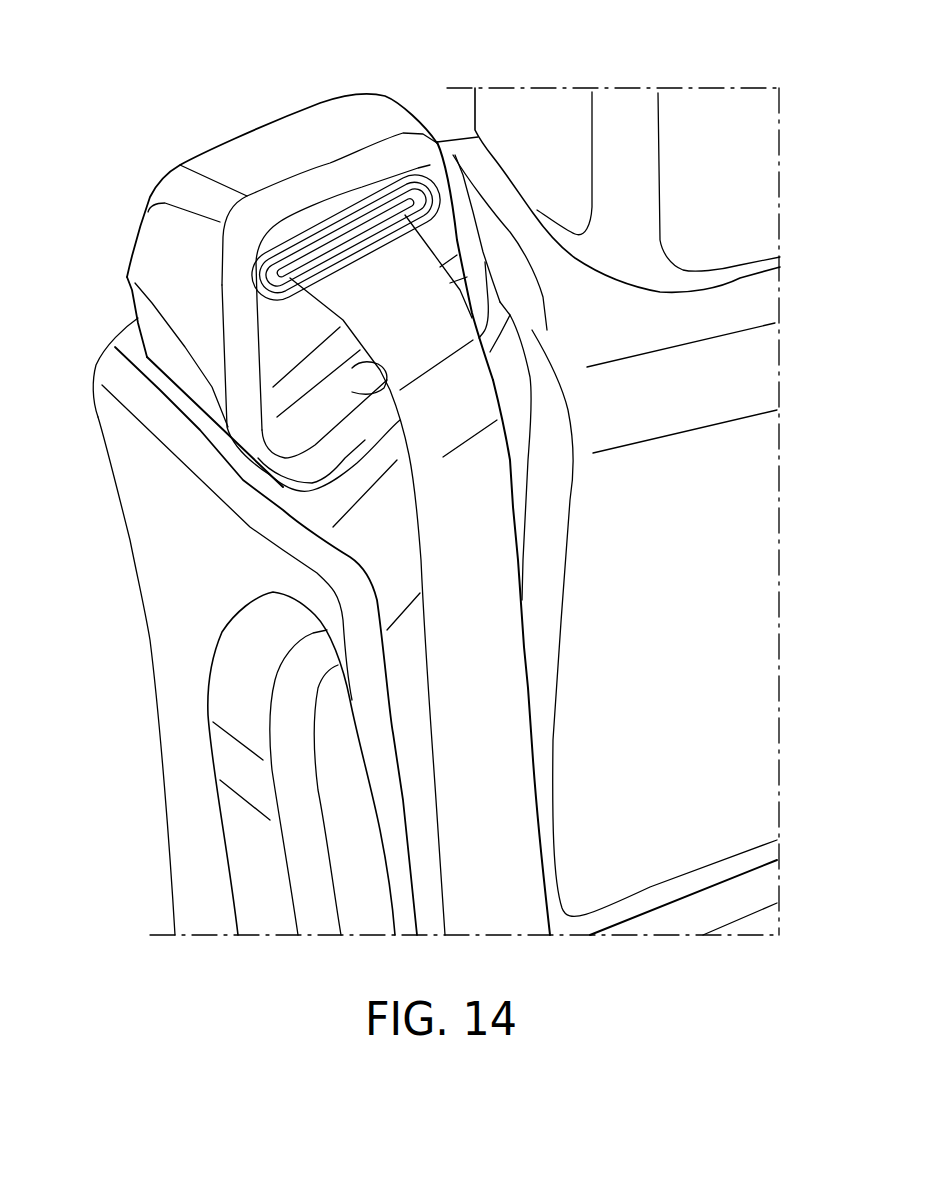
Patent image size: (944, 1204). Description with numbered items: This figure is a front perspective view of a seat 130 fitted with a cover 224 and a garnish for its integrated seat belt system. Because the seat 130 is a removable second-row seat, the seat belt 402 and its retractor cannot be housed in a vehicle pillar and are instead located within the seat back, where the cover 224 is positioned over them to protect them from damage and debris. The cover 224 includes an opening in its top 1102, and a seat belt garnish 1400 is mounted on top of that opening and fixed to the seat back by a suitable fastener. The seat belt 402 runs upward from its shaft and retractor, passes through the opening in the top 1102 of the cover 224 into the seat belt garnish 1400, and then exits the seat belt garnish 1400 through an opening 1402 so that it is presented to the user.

The seat 130 is at (690, 485).
The cover 224 is at (213, 597).
The seat belt 402 is at (493, 685).
The top 1102 is at (130, 348).
The seat belt garnish 1400 is at (305, 137).
The opening 1402 is at (408, 210).